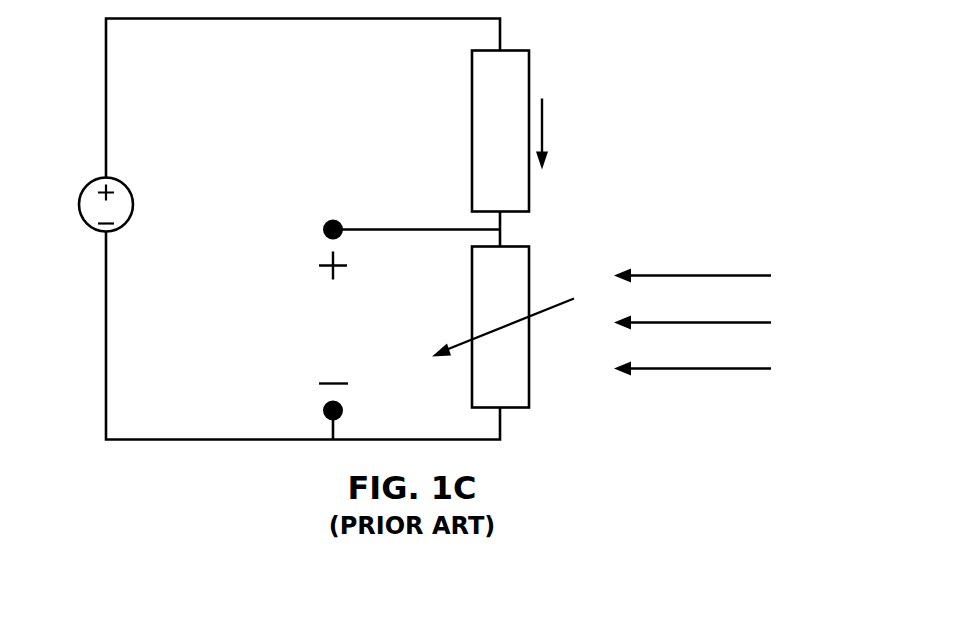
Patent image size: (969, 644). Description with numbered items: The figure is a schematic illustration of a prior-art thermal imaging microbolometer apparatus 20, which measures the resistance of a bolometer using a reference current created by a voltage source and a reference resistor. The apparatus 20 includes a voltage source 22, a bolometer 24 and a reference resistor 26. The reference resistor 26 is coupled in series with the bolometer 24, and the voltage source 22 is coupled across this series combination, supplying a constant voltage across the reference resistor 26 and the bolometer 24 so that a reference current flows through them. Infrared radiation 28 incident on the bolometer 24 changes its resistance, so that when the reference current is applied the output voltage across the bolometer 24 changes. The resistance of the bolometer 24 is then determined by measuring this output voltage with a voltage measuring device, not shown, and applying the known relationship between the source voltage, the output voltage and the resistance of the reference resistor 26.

The thermal imaging microbolometer apparatus 20 is at (148, 459).
The voltage source 22 is at (82, 216).
The bolometer 24 is at (529, 395).
The reference resistor 26 is at (529, 75).
The infrared radiation 28 is at (693, 368).